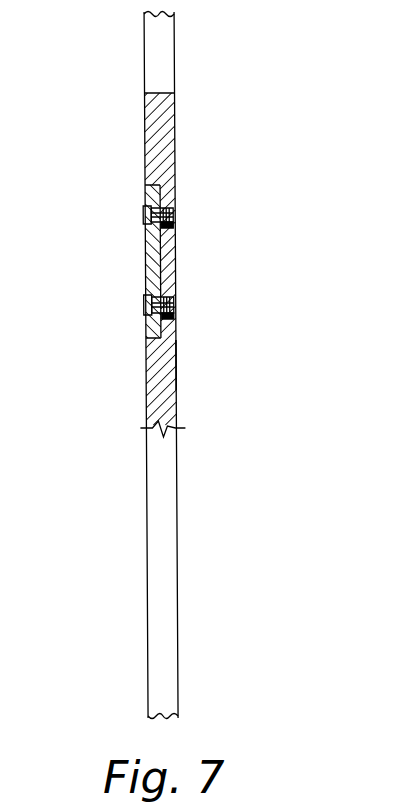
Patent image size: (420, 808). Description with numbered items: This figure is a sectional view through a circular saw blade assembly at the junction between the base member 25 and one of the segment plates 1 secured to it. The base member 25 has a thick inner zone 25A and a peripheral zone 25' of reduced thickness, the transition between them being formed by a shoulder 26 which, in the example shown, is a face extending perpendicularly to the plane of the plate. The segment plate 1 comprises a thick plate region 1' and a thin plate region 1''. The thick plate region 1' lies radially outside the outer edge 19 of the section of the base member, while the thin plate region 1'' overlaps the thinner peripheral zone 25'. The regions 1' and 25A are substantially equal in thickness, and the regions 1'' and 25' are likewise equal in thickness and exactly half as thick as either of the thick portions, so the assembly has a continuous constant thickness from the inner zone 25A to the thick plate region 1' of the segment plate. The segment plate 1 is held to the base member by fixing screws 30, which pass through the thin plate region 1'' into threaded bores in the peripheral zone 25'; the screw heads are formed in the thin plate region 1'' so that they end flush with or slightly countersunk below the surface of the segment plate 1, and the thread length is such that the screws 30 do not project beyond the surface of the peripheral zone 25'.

The segment plate 1 is at (208, 258).
The thick plate region 1' is at (206, 139).
The thin plate region 1'' is at (221, 261).
The outer edge 19 is at (151, 186).
The base member 25 is at (233, 365).
The peripheral zone 25' is at (101, 259).
The inner zone 25A is at (153, 405).
The shoulder 26 is at (175, 363).
The fixing screws 30 is at (143, 213).